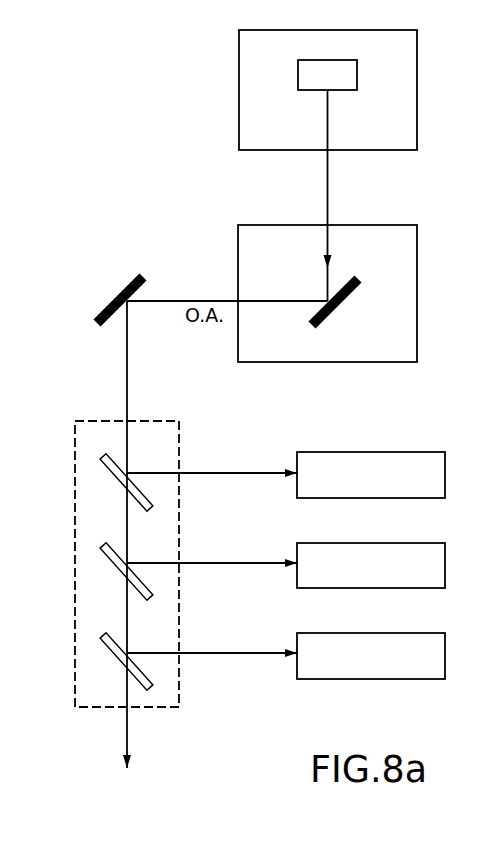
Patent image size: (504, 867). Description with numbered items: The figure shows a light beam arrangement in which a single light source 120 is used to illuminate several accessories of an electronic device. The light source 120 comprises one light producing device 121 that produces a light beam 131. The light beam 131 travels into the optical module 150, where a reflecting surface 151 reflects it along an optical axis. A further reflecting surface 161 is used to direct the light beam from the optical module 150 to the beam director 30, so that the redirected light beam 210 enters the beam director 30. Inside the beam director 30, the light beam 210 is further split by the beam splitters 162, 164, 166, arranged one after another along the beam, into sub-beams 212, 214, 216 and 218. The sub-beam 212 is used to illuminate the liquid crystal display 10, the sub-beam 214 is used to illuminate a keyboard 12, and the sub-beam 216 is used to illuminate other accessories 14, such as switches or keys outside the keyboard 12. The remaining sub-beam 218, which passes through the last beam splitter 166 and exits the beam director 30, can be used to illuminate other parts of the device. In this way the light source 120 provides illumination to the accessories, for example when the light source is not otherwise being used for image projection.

The light source 120 is at (239, 122).
The light producing device 121 is at (333, 91).
The light beam 131 is at (327, 200).
The optical module 150 is at (238, 232).
The reflecting surface 151 is at (344, 280).
The reflecting surface 161 is at (137, 268).
The light beam 210 is at (127, 385).
The beam director 30 is at (75, 488).
The beam splitter 162 is at (104, 464).
The beam splitter 164 is at (107, 556).
The beam splitter 166 is at (107, 646).
The sub-beam 212 is at (197, 473).
The sub-beam 214 is at (197, 563).
The sub-beam 216 is at (197, 653).
The sub-beam 218 is at (125, 720).
The liquid crystal display 10 is at (445, 478).
The keyboard 12 is at (445, 570).
The accessories 14 is at (445, 660).